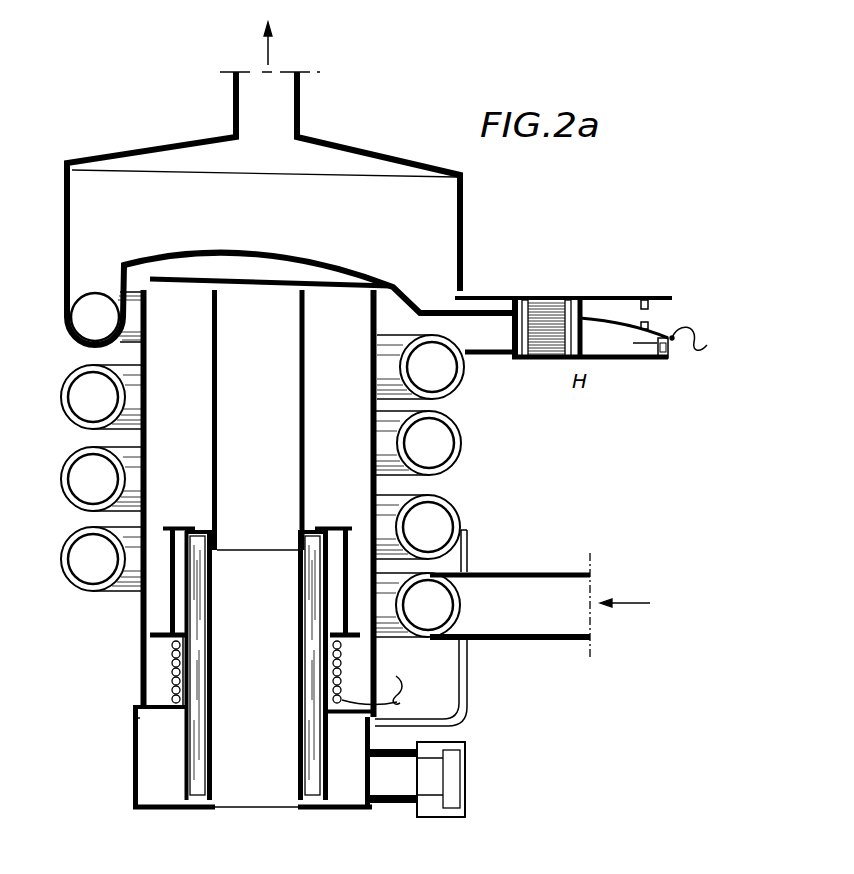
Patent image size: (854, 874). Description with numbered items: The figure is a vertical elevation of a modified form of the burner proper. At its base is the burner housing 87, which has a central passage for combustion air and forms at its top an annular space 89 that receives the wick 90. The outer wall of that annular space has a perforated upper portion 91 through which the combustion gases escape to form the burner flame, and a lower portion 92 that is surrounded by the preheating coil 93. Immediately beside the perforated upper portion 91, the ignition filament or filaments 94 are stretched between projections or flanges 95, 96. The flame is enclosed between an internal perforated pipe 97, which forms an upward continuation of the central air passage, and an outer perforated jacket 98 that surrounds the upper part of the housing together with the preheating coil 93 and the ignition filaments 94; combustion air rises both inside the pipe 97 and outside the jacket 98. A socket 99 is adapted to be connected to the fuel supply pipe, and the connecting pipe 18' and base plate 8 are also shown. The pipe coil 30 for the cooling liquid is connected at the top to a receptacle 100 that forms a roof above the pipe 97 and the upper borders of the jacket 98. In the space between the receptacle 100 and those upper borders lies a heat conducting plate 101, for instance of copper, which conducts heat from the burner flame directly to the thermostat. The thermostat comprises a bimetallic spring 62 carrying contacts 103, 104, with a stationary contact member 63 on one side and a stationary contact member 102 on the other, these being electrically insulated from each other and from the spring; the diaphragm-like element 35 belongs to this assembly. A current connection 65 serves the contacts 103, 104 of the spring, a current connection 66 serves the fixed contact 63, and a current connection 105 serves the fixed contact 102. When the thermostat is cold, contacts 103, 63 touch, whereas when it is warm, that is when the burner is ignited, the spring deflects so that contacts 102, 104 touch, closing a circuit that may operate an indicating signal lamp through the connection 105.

The receptacle 100 is at (454, 203).
The heat conducting plate 101 is at (407, 290).
The current connection 105 is at (487, 295).
The bimetallic spring 62 is at (613, 320).
The diaphragm 35 is at (594, 318).
The contact member 102 is at (647, 300).
The contact 104 is at (650, 323).
The contact 103 is at (632, 341).
The contact member 63 is at (662, 361).
The current connection 65 is at (688, 355).
The current connection 66 is at (491, 357).
The pipe coil 30 is at (447, 393).
The internal perforated pipe 97 is at (304, 394).
The outer perforated jacket 98 is at (374, 400).
The projection or flange 95 is at (172, 526).
The ignition filament 94 is at (170, 565).
The upper portion of outer wall 91 is at (172, 590).
The wick 90 is at (198, 700).
The projection or flange 96 is at (152, 633).
The annular space 89 is at (167, 662).
The lower portion of outer wall 92 is at (342, 667).
The preheating coil 93 is at (167, 686).
The burner housing 87 is at (134, 768).
The base plate 8 is at (246, 809).
The socket 99 is at (401, 804).
The connecting pipe 18' is at (443, 683).